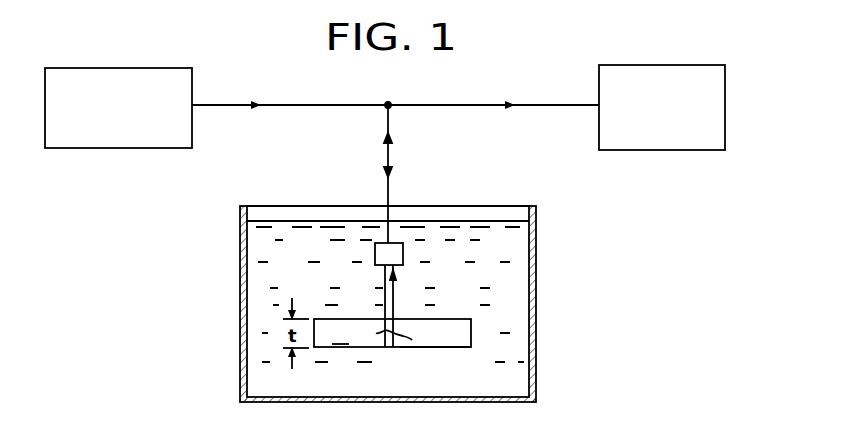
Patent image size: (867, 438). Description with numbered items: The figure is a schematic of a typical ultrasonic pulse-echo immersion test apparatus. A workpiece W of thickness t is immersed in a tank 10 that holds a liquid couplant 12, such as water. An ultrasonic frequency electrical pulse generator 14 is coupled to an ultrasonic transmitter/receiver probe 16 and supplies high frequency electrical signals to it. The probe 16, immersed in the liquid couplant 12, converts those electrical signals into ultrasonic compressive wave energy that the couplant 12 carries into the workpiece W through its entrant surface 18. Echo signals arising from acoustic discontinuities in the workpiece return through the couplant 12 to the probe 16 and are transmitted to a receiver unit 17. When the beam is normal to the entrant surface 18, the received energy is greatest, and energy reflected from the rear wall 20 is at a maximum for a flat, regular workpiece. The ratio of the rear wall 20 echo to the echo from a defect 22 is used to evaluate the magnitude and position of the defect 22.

The tank 10 is at (536, 323).
The liquid couplant 12 is at (313, 255).
The ultrasonic frequency electrical pulse generator 14 is at (100, 149).
The ultrasonic transmitter/receiver probe 16 is at (403, 255).
The receiver unit 17 is at (684, 133).
The workpiece entrant surface 18 is at (457, 315).
The rear wall 20 is at (452, 353).
The defect 22 is at (395, 331).